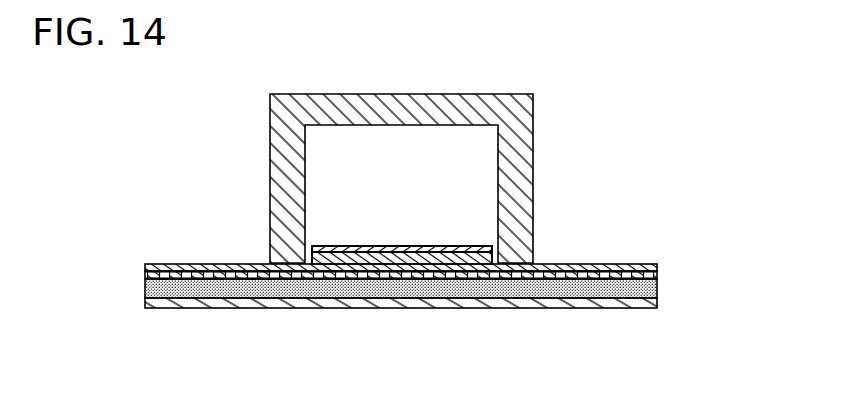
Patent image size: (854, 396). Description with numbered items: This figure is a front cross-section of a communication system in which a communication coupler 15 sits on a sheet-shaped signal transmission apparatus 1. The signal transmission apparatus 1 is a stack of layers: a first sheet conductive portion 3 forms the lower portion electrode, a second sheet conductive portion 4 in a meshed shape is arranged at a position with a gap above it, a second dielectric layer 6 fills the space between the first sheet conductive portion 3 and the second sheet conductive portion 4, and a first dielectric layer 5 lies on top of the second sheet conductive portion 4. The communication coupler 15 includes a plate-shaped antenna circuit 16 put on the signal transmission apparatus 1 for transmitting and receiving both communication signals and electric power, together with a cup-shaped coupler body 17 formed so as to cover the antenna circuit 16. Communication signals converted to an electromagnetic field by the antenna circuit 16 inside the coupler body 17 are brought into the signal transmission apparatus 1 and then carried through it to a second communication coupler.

The signal transmission apparatus 1 is at (666, 283).
The first sheet conductive portion 3 is at (145, 303).
The second sheet conductive portion 4 is at (145, 274).
The first dielectric layer 5 is at (145, 266).
The second dielectric layer 6 is at (145, 287).
The communication coupler 15 is at (602, 182).
The antenna circuit 16 is at (398, 246).
The coupler body 17 is at (276, 173).